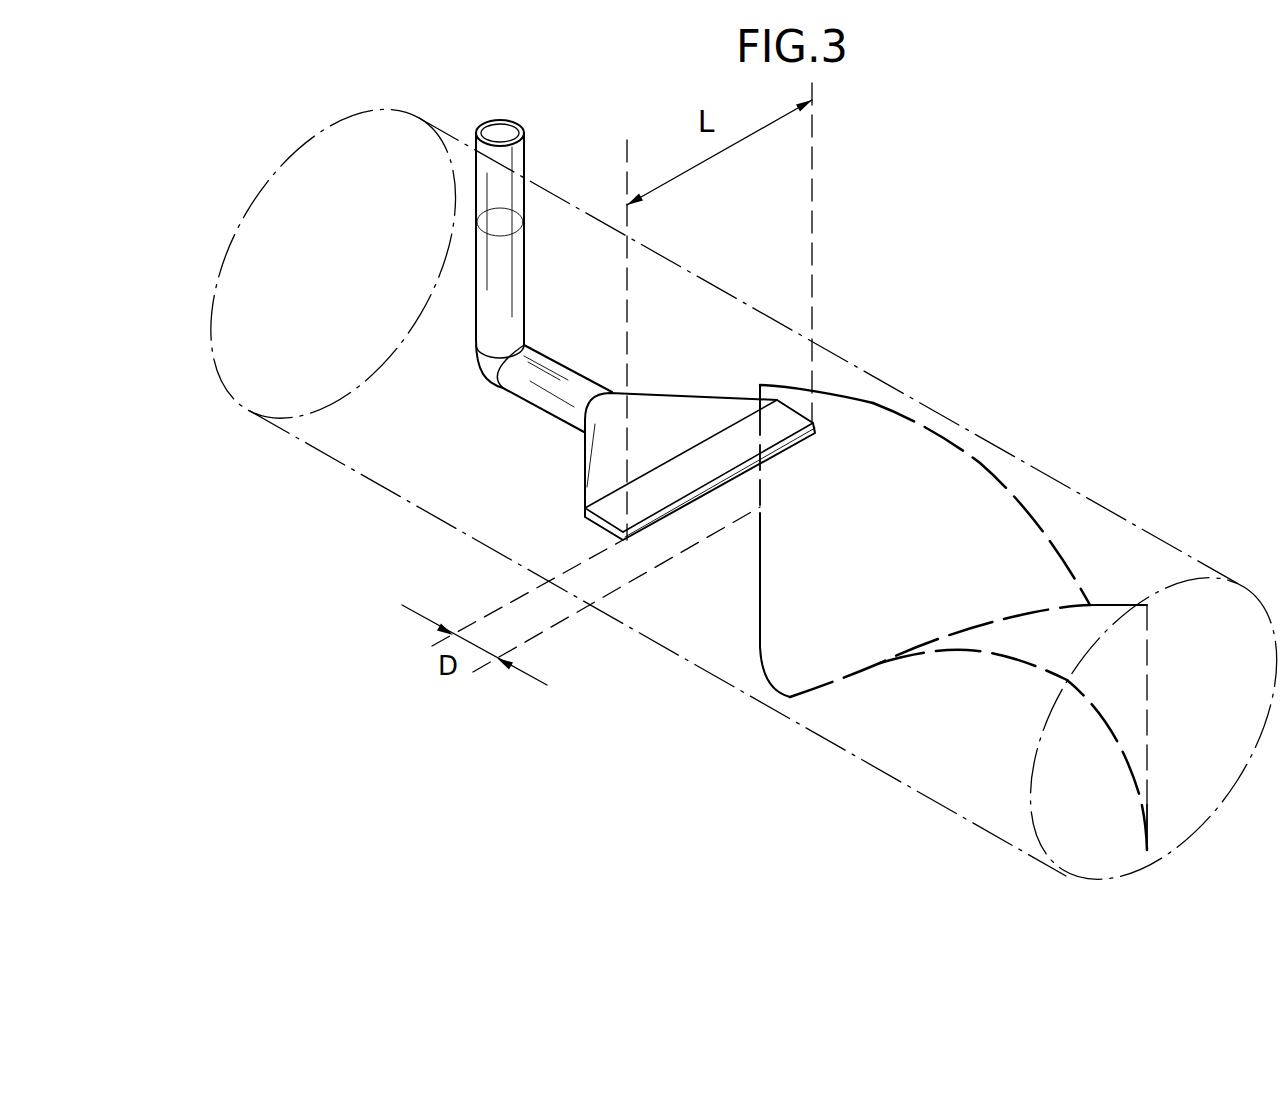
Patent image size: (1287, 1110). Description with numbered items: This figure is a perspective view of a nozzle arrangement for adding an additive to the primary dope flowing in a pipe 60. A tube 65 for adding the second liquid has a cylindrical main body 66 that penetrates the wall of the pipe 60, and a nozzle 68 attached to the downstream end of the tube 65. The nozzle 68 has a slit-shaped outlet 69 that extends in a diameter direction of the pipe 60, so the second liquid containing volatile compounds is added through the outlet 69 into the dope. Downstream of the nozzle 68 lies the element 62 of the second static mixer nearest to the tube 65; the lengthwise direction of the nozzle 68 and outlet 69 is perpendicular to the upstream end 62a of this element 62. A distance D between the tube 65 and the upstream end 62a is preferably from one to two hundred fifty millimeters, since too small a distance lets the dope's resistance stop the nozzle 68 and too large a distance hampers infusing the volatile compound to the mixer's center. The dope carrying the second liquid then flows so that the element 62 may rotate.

The pipe 60 is at (1116, 513).
The element 62 is at (920, 423).
The upstream end 62a is at (758, 568).
The tube 65 is at (502, 120).
The cylindrical main body 66 is at (476, 327).
The nozzle 68 is at (714, 384).
The slit-shaped outlet 69 is at (733, 472).